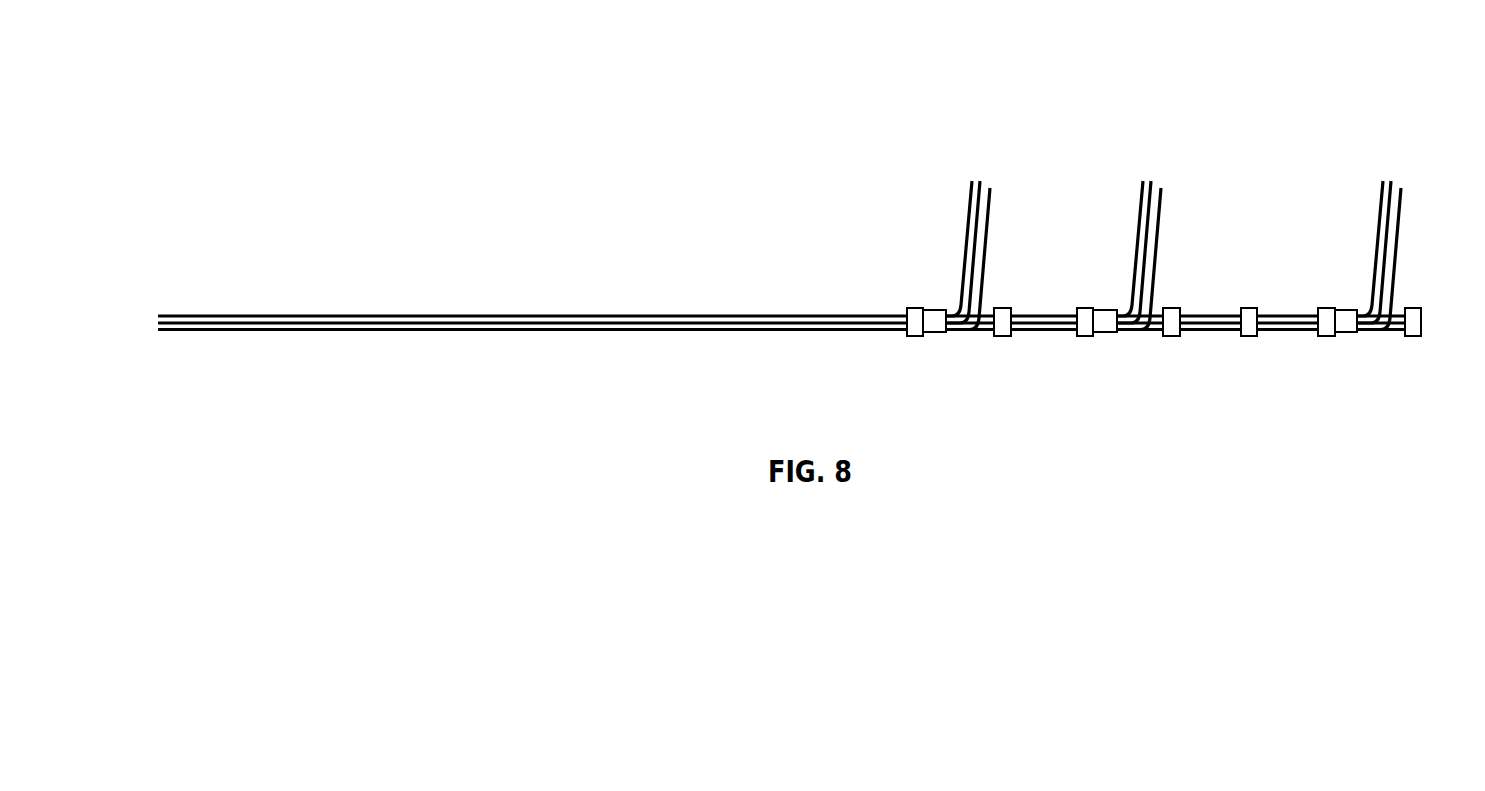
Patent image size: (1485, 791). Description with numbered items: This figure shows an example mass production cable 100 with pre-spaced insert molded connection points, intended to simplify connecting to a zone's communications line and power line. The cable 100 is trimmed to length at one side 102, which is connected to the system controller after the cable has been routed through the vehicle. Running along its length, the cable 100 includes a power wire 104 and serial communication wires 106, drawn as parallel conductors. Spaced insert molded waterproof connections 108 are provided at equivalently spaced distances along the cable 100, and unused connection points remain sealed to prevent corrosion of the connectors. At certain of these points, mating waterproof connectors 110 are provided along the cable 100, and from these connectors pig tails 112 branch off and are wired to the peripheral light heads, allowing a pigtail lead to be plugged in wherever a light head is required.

The cable 100 is at (340, 52).
The one side 102 is at (152, 329).
The power wire 104 is at (500, 313).
The serial communication wires 106 is at (513, 333).
The insert molded waterproof connections 108 is at (910, 307).
The mating waterproof connectors 110 is at (937, 308).
The pig tails 112 is at (963, 196).